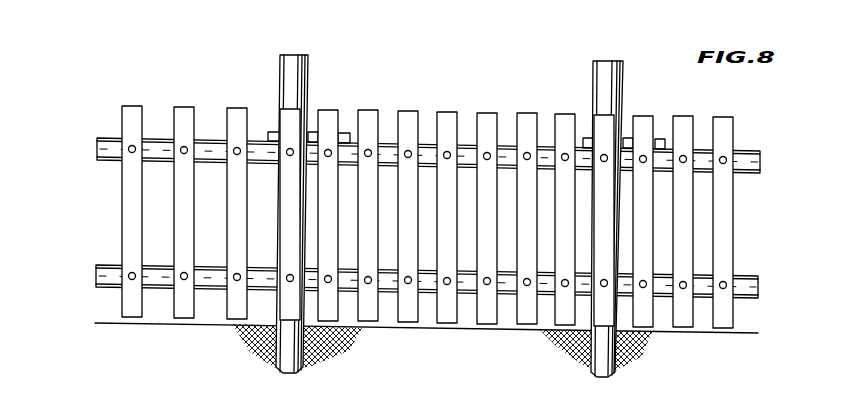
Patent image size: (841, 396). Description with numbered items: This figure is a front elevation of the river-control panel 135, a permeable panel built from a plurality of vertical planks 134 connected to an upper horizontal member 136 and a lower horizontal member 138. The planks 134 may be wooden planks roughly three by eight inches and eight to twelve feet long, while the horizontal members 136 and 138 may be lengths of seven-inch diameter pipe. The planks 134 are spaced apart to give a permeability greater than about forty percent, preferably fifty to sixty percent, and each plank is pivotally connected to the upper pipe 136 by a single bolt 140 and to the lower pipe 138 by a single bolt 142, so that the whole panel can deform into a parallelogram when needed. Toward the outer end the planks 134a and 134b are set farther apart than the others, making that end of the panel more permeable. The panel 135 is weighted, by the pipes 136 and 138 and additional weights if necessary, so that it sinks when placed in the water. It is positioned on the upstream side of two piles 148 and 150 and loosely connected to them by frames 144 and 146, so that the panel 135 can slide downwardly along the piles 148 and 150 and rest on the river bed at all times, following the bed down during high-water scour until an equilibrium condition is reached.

The vertical planks 134 is at (445, 324).
The vertical plank 134a is at (133, 320).
The vertical plank 134b is at (195, 318).
The panel 135 is at (460, 102).
The horizontal member 136 is at (97, 147).
The horizontal member 138 is at (97, 270).
The bolt 140 is at (131, 145).
The bolt 142 is at (129, 278).
The frame 144 is at (272, 132).
The frame 146 is at (660, 138).
The pile 148 is at (290, 55).
The pile 150 is at (601, 61).